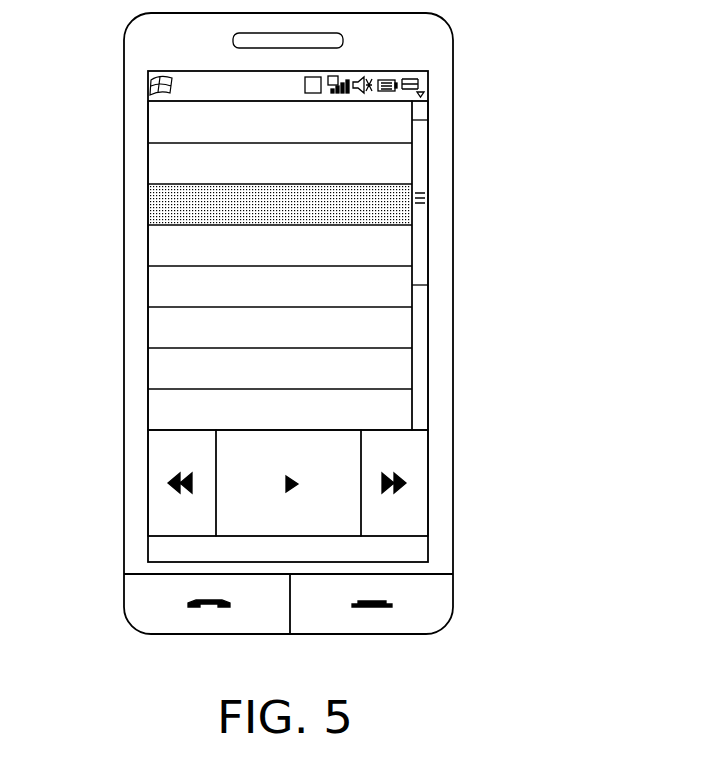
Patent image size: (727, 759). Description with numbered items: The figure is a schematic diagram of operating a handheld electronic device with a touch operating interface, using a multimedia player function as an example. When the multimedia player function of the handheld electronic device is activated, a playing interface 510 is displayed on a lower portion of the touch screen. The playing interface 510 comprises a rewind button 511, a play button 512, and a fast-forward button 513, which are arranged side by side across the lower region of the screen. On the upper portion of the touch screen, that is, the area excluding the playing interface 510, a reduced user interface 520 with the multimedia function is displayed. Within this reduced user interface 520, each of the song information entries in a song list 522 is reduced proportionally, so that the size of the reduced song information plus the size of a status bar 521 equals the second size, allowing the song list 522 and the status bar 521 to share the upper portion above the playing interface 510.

The playing interface 510 is at (431, 513).
The rewind button 511 is at (162, 487).
The play button 512 is at (334, 452).
The fast-forward button 513 is at (403, 500).
The reduced user interface 520 is at (432, 221).
The status bar 521 is at (421, 96).
The song list 522 is at (398, 293).